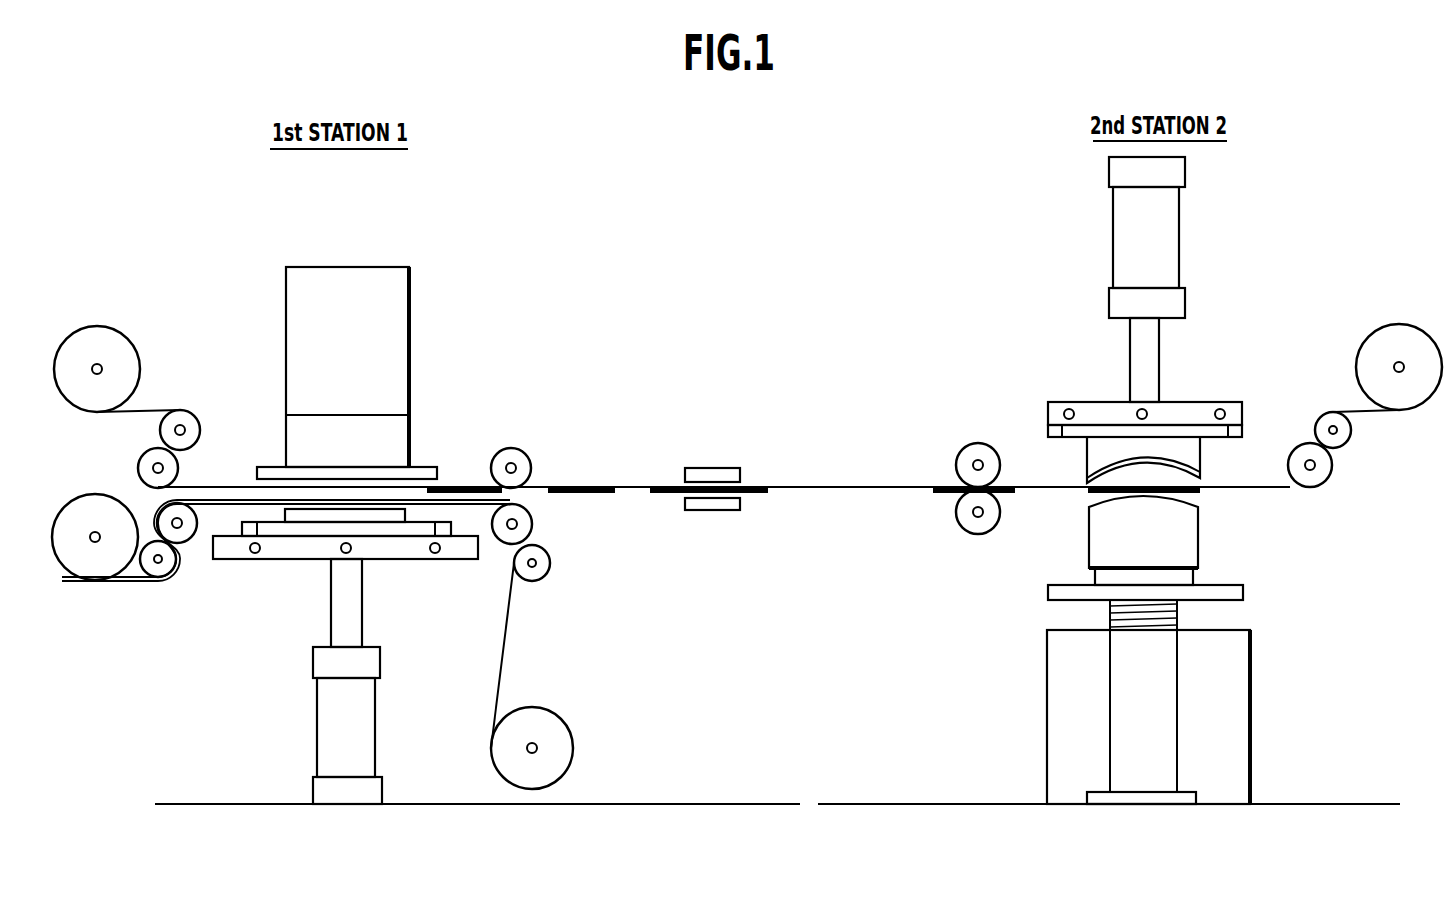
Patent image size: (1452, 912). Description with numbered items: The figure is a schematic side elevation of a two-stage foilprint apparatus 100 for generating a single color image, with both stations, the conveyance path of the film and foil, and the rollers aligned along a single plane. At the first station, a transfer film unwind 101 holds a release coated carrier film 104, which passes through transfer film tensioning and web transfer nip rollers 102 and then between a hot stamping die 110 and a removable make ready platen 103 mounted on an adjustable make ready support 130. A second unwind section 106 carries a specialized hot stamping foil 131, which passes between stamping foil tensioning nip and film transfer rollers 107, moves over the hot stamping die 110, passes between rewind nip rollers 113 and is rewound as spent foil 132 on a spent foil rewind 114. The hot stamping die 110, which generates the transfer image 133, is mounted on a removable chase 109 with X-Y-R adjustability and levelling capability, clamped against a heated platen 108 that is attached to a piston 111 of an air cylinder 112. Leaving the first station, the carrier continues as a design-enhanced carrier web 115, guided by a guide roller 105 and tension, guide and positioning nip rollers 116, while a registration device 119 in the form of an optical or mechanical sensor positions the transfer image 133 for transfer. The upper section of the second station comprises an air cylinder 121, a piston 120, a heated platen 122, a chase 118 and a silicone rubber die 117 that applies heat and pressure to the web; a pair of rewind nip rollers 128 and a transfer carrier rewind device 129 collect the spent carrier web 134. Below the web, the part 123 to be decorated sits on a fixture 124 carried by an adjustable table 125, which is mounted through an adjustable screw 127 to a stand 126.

The two-stage foilprint apparatus 100 is at (748, 258).
The transfer film unwind 101 is at (100, 335).
The transfer film tensioning and web transfer nip rollers 102 is at (192, 436).
The removable make ready platen 103 is at (433, 468).
The release coated carrier film 104 is at (145, 410).
The guide roller 105 is at (532, 470).
The second unwind section 106 is at (78, 512).
The stamping foil tensioning nip and film transfer rollers 107 is at (167, 567).
The heated platen 108 is at (235, 550).
The removable chase 109 is at (315, 530).
The hot stamping die 110 is at (390, 517).
The piston 111 is at (352, 608).
The air cylinder 112 is at (332, 727).
The rewind nip rollers 113 is at (538, 567).
The spent foil rewind 114 is at (500, 758).
The design-enhanced carrier web 115 is at (638, 487).
The tension, guide and positioning nip rollers 116 is at (960, 462).
The silicone rubber die 117 is at (1190, 450).
The chase 118 is at (1046, 432).
The registration device 119 is at (718, 468).
The piston 120 is at (1147, 357).
The air cylinder 121 is at (1165, 227).
The heated platen 122 is at (1202, 410).
The part 123 is at (1185, 530).
The fixture 124 is at (1195, 577).
The adjustable table 125 is at (1243, 593).
The stand 126 is at (1250, 680).
The adjustable screw 127 is at (1178, 720).
The rewind nip rollers 128 is at (1340, 440).
The transfer carrier rewind device 129 is at (1390, 338).
The make ready support 130 is at (388, 358).
The specialized hot stamping foil 131 is at (128, 587).
The spent foil 132 is at (495, 700).
The transfer image 133 is at (755, 492).
The spent carrier web 134 is at (1345, 412).